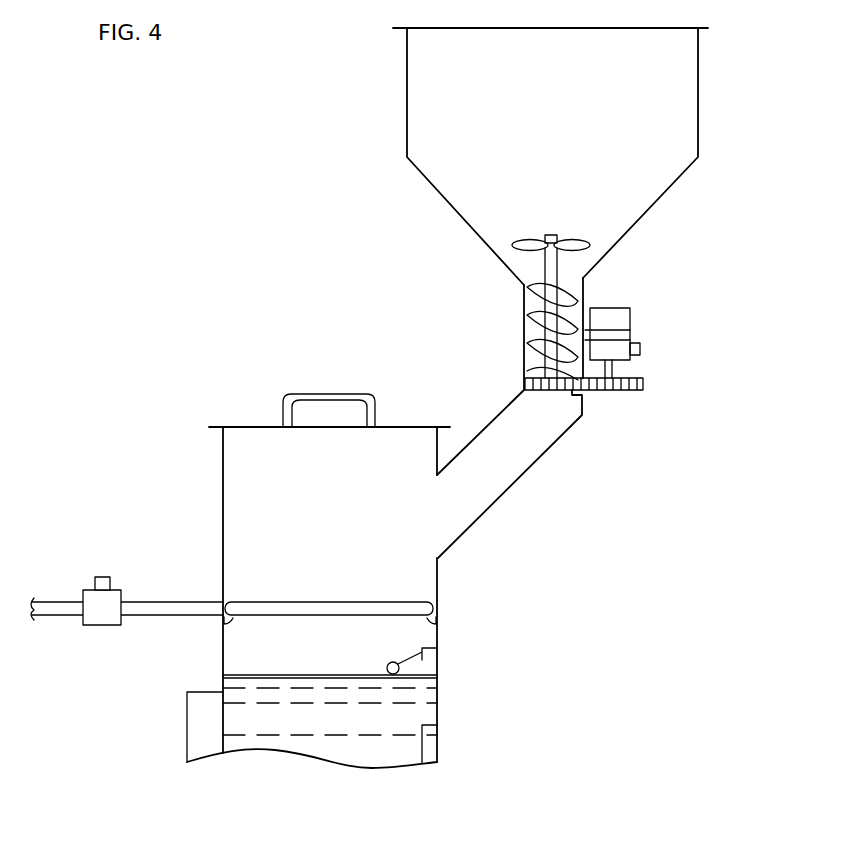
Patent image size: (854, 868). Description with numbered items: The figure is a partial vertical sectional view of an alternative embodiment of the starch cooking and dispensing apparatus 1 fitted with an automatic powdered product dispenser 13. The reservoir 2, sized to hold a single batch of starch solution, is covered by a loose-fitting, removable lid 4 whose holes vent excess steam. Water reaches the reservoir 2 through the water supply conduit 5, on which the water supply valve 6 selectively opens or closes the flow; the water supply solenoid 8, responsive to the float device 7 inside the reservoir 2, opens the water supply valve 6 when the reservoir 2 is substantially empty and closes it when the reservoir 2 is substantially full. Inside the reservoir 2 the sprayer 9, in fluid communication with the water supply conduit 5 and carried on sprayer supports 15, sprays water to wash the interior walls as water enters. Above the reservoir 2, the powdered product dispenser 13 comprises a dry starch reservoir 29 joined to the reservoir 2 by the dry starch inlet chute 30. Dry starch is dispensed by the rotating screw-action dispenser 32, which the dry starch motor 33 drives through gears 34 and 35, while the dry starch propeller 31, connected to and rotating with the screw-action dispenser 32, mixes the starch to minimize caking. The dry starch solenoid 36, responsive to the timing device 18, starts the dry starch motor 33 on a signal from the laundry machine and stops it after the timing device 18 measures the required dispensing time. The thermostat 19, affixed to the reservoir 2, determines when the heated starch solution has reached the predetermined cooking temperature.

The starch cooking and dispensing apparatus 1 is at (545, 701).
The reservoir 2 is at (437, 712).
The lid 4 is at (408, 426).
The water supply conduit 5 is at (150, 605).
The water supply valve 6 is at (97, 620).
The float device 7 is at (437, 656).
The water supply solenoid 8 is at (108, 578).
The sprayer 9 is at (270, 600).
The powdered product dispenser 13 is at (366, 118).
The sprayer supports 15 is at (235, 622).
The timing device 18 is at (187, 744).
The thermostat 19 is at (437, 746).
The dry starch reservoir 29 is at (698, 101).
The dry starch inlet chute 30 is at (530, 470).
The dry starch propeller 31 is at (578, 240).
The screw-action dispenser 32 is at (528, 318).
The dry starch motor 33 is at (625, 310).
The gear 34 is at (527, 383).
The gear 35 is at (644, 391).
The dry starch solenoid 36 is at (640, 350).